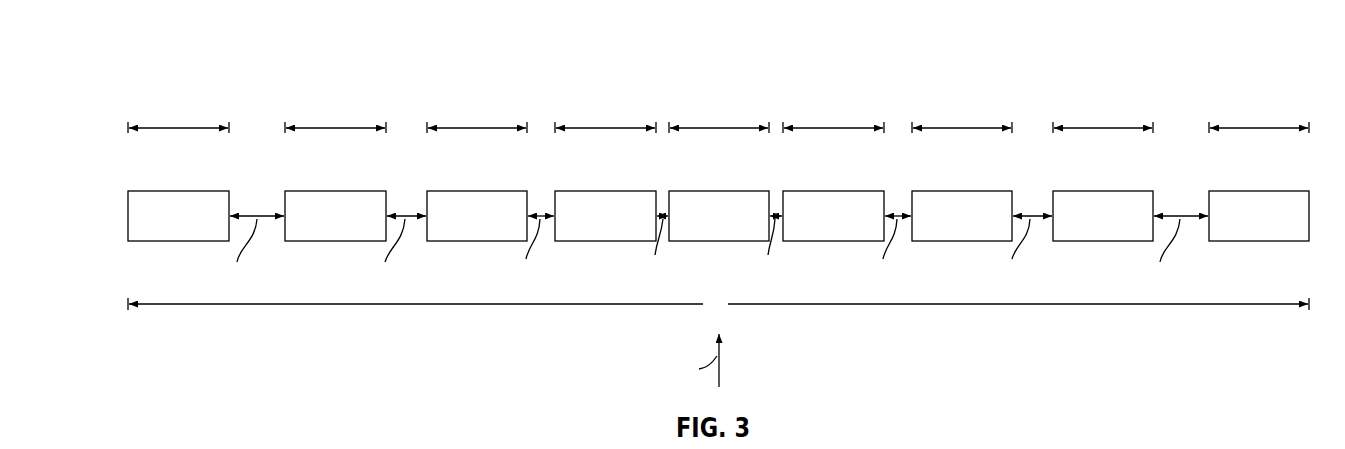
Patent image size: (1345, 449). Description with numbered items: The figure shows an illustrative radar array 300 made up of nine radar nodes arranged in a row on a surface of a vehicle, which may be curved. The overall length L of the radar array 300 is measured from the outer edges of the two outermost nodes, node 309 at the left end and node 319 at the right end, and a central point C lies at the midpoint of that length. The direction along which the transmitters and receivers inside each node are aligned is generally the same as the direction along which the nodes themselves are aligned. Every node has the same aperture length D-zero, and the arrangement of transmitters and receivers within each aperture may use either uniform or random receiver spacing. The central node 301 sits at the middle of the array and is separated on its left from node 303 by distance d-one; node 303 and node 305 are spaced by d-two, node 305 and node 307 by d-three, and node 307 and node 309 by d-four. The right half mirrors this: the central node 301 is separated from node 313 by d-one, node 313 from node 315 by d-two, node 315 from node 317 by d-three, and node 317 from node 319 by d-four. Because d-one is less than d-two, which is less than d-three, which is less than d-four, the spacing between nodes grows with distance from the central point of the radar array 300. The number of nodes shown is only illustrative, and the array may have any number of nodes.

The radar array 300 is at (87, 59).
The central node 301 is at (692, 190).
The radar node 303 is at (580, 190).
The radar node 305 is at (450, 190).
The radar node 307 is at (307, 190).
The radar node 309 is at (161, 190).
The radar node 313 is at (810, 190).
The radar node 315 is at (933, 190).
The radar node 317 is at (1077, 190).
The radar node 319 is at (1237, 190).